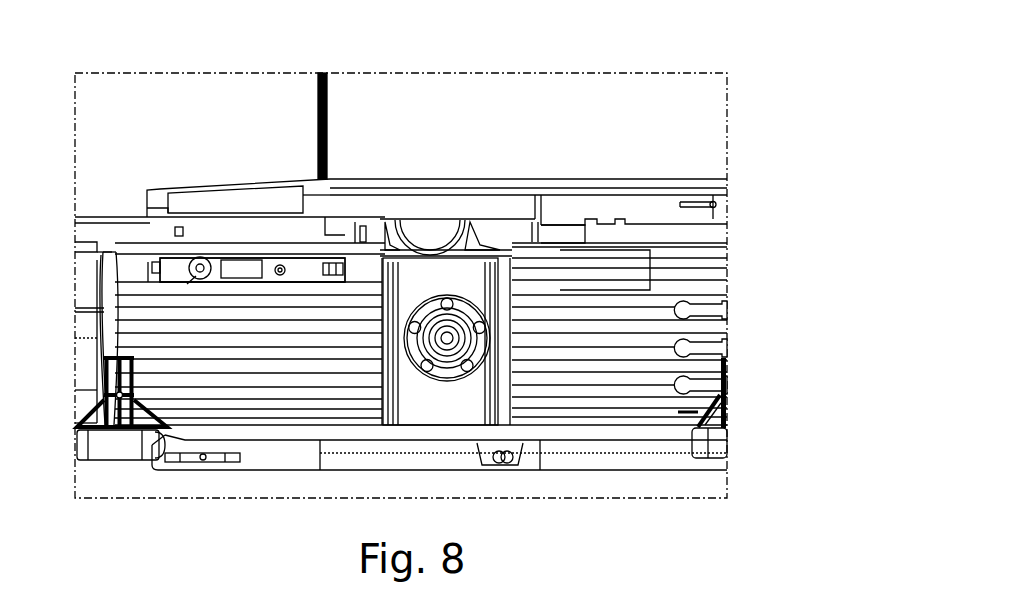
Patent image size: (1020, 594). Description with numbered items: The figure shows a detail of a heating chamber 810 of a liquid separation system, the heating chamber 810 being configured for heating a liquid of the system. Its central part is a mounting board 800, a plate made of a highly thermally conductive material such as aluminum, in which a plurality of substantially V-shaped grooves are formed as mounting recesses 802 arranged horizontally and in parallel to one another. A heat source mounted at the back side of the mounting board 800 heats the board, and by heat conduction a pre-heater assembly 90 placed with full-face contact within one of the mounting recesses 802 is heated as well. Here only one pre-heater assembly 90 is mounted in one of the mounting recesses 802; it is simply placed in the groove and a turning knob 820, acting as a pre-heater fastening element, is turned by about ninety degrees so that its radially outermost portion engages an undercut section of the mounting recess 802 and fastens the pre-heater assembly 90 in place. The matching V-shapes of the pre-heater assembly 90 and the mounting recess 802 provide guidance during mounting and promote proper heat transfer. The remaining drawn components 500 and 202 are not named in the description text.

The heating chamber 810 is at (597, 90).
The fastener block 500 is at (156, 264).
The pre-heater assembly 90 is at (227, 264).
The mounting plate 202 is at (302, 265).
The turning knob 820 is at (198, 274).
The mounting board 800 is at (568, 252).
The mounting recess 802 is at (598, 267).